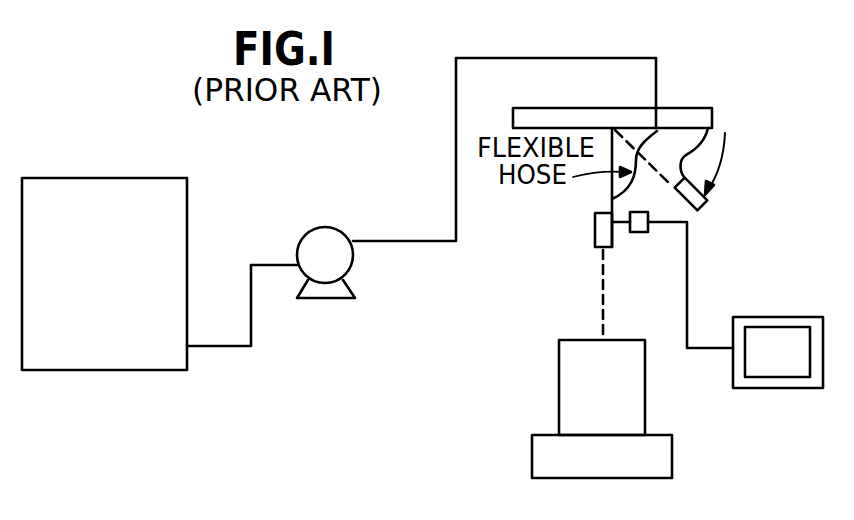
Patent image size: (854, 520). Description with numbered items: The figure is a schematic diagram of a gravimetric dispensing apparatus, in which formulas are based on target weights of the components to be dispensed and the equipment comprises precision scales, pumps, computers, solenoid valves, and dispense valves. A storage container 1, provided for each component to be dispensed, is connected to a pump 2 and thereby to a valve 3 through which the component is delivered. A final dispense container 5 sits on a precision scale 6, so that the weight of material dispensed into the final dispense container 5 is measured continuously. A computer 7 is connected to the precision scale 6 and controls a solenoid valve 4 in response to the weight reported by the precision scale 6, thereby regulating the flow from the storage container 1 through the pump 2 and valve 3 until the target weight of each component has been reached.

The storage container 1 is at (138, 178).
The pump 2 is at (335, 229).
The valve 3 is at (595, 235).
The solenoid valve 4 is at (638, 232).
The final dispense container 5 is at (559, 377).
The precision scale 6 is at (532, 457).
The computer 7 is at (795, 317).